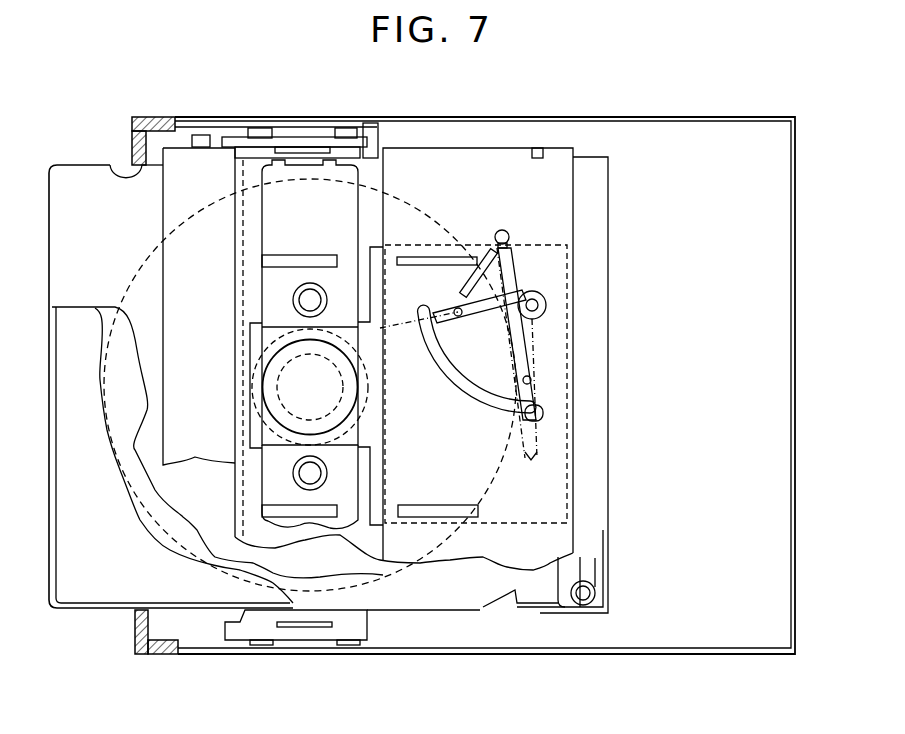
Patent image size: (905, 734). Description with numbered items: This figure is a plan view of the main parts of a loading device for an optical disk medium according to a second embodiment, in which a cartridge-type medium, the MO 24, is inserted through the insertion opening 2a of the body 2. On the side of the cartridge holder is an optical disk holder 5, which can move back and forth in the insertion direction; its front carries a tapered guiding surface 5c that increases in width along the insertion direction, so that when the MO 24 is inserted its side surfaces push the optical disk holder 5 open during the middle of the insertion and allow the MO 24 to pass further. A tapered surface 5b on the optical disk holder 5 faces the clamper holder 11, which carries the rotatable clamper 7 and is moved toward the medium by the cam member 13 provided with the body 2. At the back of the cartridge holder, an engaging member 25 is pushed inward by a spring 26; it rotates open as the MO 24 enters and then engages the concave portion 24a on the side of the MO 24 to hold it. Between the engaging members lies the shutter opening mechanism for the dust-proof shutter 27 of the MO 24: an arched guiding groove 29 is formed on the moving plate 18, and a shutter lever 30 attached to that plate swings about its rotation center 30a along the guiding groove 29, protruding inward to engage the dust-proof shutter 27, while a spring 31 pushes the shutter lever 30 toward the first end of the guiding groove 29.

The body 2 is at (152, 117).
The insertion opening 2a is at (127, 178).
The optical disk holder 5 is at (360, 628).
The tapered surface 5b is at (303, 628).
The tapered guiding surface 5c is at (233, 618).
The clamper 7 is at (290, 368).
The clamper holder 11 is at (310, 193).
The cam member 13 is at (432, 258).
The moving plate 18 is at (512, 173).
The MO 24 is at (87, 610).
The concave portion 24a is at (497, 603).
The engaging member 25 is at (510, 607).
The spring 26 is at (597, 577).
The dust-proof shutter 27 is at (572, 483).
The guiding groove 29 is at (457, 387).
The shutter lever 30 is at (533, 393).
The rotation center 30a is at (547, 303).
The spring 31 is at (517, 273).